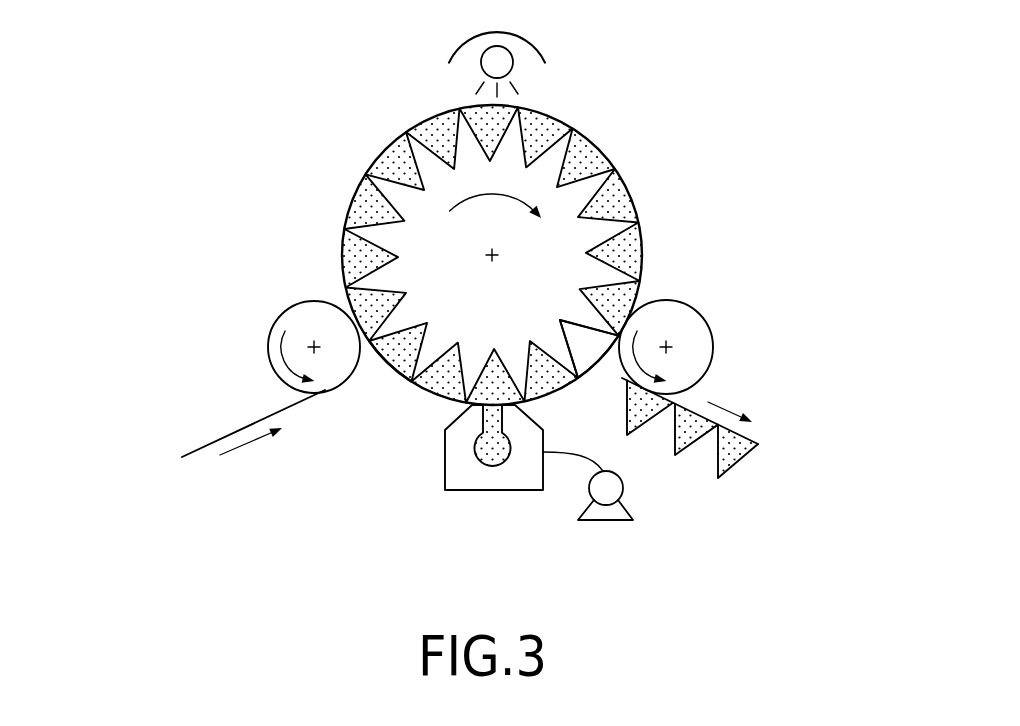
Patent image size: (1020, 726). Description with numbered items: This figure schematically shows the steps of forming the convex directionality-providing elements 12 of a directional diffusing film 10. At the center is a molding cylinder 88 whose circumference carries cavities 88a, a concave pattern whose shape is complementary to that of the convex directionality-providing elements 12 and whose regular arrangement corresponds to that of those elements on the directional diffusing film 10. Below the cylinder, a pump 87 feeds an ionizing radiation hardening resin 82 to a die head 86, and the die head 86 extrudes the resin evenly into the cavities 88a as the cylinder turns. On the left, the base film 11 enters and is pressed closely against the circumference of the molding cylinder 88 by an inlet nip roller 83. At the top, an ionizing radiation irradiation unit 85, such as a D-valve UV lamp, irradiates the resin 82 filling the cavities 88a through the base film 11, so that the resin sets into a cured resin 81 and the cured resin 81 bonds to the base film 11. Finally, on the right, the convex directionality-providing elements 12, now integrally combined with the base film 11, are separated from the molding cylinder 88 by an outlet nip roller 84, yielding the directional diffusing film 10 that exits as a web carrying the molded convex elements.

The directional diffusing film 10 is at (778, 428).
The base film 11 is at (218, 440).
The convex directionality-providing elements 12 is at (735, 462).
The cured resin 81 is at (597, 145).
The ionizing radiation hardening resin 82 is at (409, 388).
The inlet nip roller 83 is at (283, 312).
The outlet nip roller 84 is at (708, 322).
The ionizing radiation irradiation unit 85 is at (543, 57).
The die head 86 is at (485, 490).
The pump 87 is at (606, 520).
The molding cylinder 88 is at (558, 247).
The cavities 88a is at (547, 380).